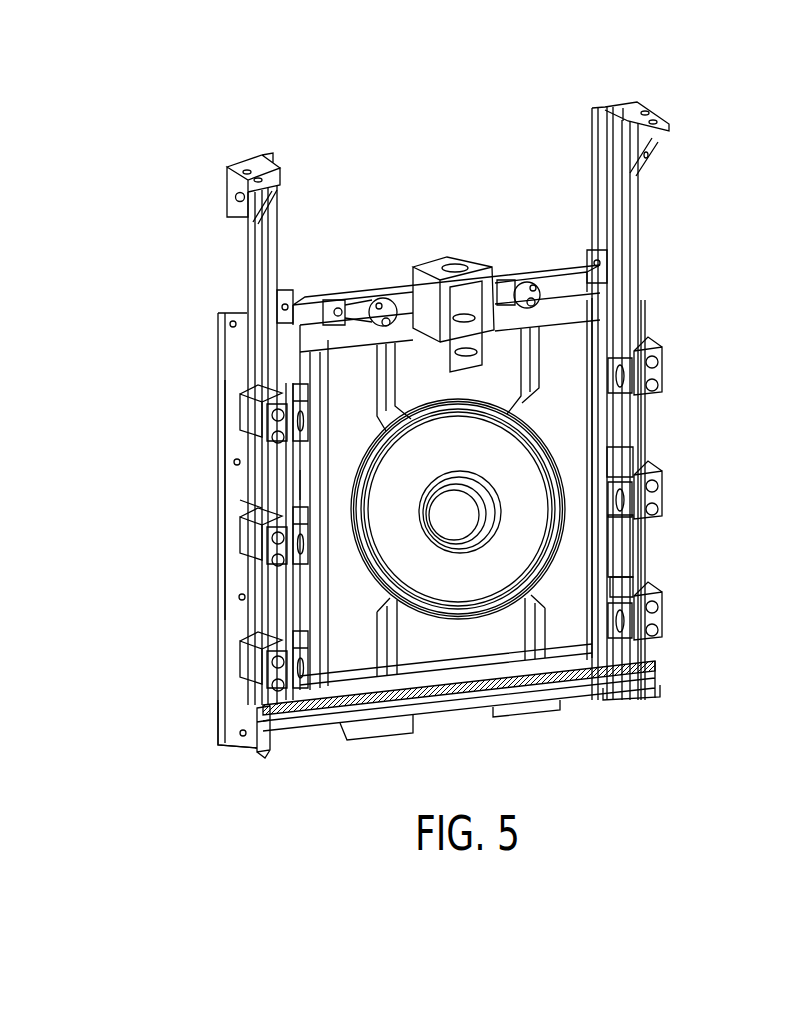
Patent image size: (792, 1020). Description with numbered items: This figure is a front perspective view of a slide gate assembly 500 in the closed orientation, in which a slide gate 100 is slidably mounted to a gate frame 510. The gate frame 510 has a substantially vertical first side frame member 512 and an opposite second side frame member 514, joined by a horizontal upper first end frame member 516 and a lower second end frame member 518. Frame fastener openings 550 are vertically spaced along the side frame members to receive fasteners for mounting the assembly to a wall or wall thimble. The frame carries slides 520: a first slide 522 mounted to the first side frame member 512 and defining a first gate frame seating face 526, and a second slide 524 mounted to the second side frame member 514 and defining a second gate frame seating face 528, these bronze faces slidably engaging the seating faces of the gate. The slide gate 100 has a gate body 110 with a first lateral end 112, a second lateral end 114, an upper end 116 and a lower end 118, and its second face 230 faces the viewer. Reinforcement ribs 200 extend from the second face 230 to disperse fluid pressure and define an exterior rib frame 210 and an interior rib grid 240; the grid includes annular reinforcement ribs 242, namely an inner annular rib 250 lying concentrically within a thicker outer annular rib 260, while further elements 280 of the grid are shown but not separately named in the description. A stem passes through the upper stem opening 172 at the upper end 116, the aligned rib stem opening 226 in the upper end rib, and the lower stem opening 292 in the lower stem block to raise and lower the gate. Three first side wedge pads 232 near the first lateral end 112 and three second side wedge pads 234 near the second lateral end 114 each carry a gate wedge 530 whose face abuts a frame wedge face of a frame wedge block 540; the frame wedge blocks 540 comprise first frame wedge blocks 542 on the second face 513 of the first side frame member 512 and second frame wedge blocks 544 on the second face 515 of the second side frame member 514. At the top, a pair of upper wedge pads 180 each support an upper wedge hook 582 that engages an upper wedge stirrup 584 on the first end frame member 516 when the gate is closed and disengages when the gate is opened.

The slide gate assembly 500 is at (360, 129).
The gate frame 510 is at (203, 361).
The frame fastener openings 550 is at (227, 322).
The first side frame member 512 is at (235, 495).
The second face 513 is at (238, 712).
The slides 520 is at (210, 190).
The first slide 522 is at (252, 253).
The first gate frame seating face 526 is at (275, 228).
The second slide 524 is at (635, 222).
The second gate frame seating face 528 is at (613, 140).
The second side frame member 514 is at (640, 437).
The second face 515 is at (640, 533).
The second lateral end 114 is at (623, 557).
The second side wedge pads 234 is at (625, 463).
The first end frame member 516 is at (562, 275).
The upper end 116 is at (587, 290).
The upper wedge pads 180 is at (358, 298).
The upper wedge stirrup 584 is at (340, 310).
The upper wedge hook 582 is at (357, 303).
The frame wedge blocks 540 is at (248, 407).
The first frame wedge blocks 542 is at (253, 423).
The first side wedge pads 232 is at (243, 527).
The first lateral end 112 is at (285, 595).
The gate wedge 530 is at (620, 395).
The second frame wedge blocks 544 is at (660, 370).
The lower end 118 is at (313, 693).
The second end frame member 518 is at (330, 725).
The reinforcement ribs 200 is at (496, 628).
The slide gate 100 is at (502, 451).
The gate body 110 is at (565, 367).
The second face 230 is at (567, 628).
The spoke 280 is at (382, 390).
The outer annular rib 260 is at (527, 432).
The annular reinforcement ribs 242 is at (535, 521).
The interior rib grid 240 is at (577, 547).
The inner annular rib 250 is at (420, 510).
The upper stem opening 172 is at (449, 248).
The rib stem opening 226 is at (460, 308).
The lower stem opening 292 is at (466, 338).
The exterior rib frame 210 is at (287, 484).